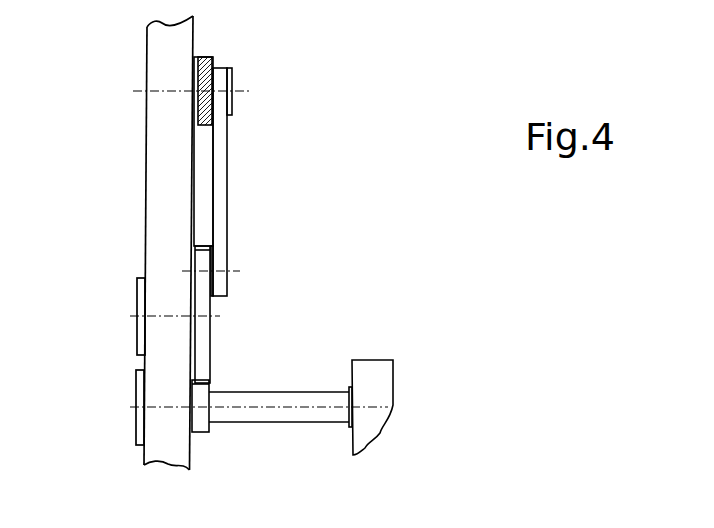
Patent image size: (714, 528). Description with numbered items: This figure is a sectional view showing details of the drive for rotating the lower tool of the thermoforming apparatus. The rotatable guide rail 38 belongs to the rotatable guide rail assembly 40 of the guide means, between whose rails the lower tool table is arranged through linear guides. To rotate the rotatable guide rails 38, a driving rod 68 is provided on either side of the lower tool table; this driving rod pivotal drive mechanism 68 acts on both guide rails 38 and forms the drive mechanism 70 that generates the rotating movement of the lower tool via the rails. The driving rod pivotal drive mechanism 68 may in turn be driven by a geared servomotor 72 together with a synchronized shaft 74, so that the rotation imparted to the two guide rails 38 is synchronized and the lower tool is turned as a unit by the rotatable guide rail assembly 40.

The rotatable guide rail 38 is at (213, 59).
The rotatable guide rail assembly 40 is at (139, 194).
The driving rod 68 is at (227, 176).
The drive mechanism 70 is at (203, 334).
The geared servomotor 72 is at (380, 385).
The synchronized shaft 74 is at (288, 389).